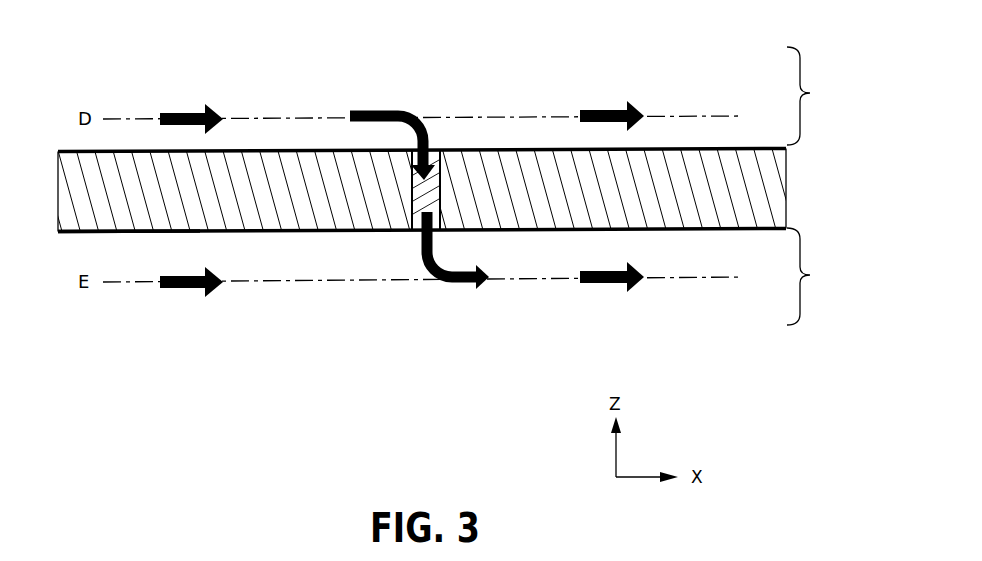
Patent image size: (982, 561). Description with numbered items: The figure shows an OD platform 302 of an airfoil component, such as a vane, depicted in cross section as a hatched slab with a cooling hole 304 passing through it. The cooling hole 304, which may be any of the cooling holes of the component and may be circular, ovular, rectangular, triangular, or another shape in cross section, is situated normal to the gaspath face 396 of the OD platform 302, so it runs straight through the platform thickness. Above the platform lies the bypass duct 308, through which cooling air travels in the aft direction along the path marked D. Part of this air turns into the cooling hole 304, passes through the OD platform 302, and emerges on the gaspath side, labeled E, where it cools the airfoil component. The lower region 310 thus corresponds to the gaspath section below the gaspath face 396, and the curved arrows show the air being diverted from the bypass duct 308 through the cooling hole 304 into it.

The OD platform 302 is at (292, 177).
The cooling hole 304 is at (441, 193).
The gaspath face 396 is at (105, 233).
The bypass duct 308 is at (833, 96).
The lower region below substrate 310 is at (833, 276).